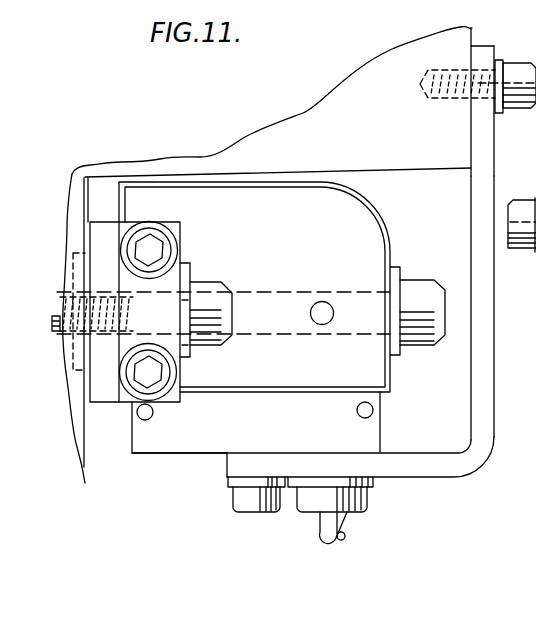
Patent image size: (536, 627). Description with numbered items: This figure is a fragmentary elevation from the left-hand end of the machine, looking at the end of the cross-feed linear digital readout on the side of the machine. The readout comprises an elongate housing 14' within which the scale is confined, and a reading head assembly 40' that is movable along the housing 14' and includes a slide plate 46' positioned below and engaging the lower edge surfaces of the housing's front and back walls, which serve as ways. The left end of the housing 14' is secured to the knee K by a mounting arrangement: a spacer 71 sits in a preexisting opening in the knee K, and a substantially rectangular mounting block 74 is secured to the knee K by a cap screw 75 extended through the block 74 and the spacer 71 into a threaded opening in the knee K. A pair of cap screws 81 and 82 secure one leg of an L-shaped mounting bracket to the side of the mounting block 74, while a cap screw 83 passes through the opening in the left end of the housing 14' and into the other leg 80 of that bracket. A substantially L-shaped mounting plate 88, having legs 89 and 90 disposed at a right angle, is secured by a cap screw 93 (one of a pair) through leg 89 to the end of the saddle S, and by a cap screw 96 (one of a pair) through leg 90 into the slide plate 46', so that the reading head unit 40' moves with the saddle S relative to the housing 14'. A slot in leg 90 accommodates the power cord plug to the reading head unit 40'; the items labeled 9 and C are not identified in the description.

The knee K is at (88, 464).
The saddle S is at (457, 168).
The nut 9 is at (512, 63).
The cap screw 93 is at (522, 197).
The leg 89 is at (495, 320).
The mounting plate 88 is at (447, 479).
The elongate housing 14' is at (247, 292).
The mounting block 74 is at (181, 376).
The spacer 71 is at (86, 256).
The cap screw 81 is at (160, 240).
The cap screw 82 is at (158, 390).
The leg 80 is at (112, 396).
The cap screw 75 is at (203, 279).
The cap screw 83 is at (412, 344).
The slide plate 46' is at (281, 422).
The reading head assembly 40' is at (179, 478).
The cap screw 96 is at (259, 513).
The leg 90 is at (393, 478).
The cable C is at (344, 526).